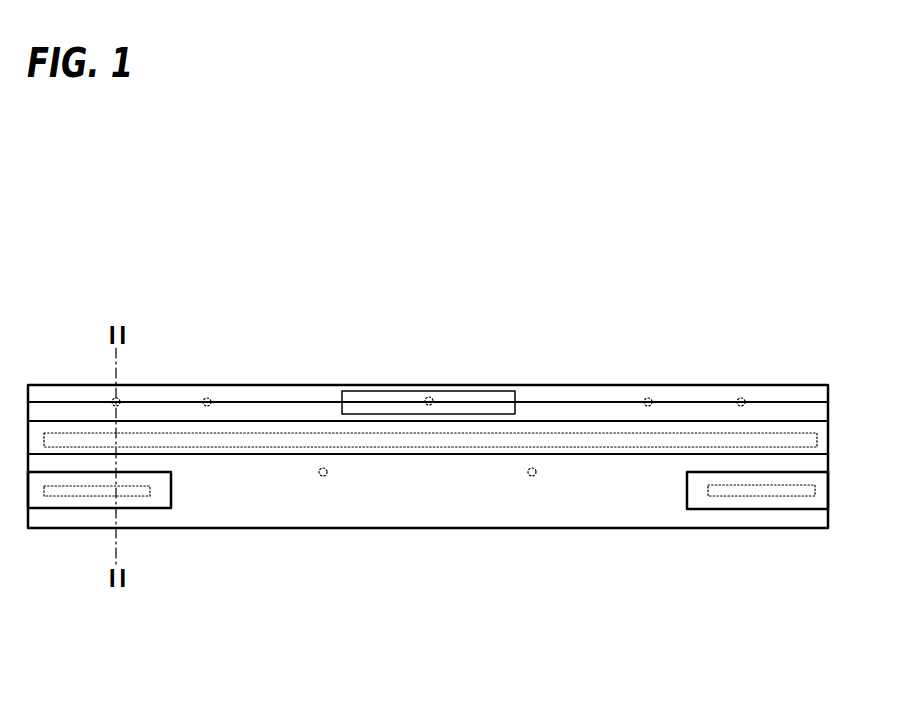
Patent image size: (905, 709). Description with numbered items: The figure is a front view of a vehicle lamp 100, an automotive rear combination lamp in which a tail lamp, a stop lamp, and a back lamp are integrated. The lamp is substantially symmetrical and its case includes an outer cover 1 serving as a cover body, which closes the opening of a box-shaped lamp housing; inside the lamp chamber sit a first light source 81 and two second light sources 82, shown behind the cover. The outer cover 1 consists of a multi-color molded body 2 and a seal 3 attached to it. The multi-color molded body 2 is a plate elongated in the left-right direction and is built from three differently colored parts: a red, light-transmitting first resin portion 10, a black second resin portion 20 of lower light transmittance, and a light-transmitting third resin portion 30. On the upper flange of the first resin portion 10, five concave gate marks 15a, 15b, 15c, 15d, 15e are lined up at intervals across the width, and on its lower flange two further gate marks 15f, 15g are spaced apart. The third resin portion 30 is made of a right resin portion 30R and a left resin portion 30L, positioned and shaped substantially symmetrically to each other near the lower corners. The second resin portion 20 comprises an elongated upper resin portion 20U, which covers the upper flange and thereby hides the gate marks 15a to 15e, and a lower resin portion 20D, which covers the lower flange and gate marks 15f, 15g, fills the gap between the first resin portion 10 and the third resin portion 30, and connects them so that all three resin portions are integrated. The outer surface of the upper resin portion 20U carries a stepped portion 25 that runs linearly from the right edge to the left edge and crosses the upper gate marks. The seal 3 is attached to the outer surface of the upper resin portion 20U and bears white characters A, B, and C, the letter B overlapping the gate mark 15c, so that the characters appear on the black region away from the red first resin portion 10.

The vehicle lamp 100 is at (61, 296).
The outer cover 1 is at (333, 323).
The multi-color molded body 2 is at (258, 387).
The seal 3 is at (353, 392).
The first resin portion 10 is at (565, 430).
The stepped portion 25 is at (615, 401).
The first light source 81 is at (790, 435).
The second light source 82 is at (73, 498).
The gate mark 15a is at (113, 399).
The gate mark 15b is at (207, 398).
The gate mark 15c is at (430, 397).
The gate mark 15d is at (648, 398).
The gate mark 15e is at (741, 398).
The gate mark 15f is at (324, 477).
The gate mark 15g is at (531, 477).
The left resin portion 30L is at (160, 500).
The right resin portion 30R is at (700, 498).
The third resin portion 30 is at (517, 642).
The lower resin portion 20D is at (755, 517).
The upper resin portion 20U is at (823, 411).
The second resin portion 20 is at (873, 607).